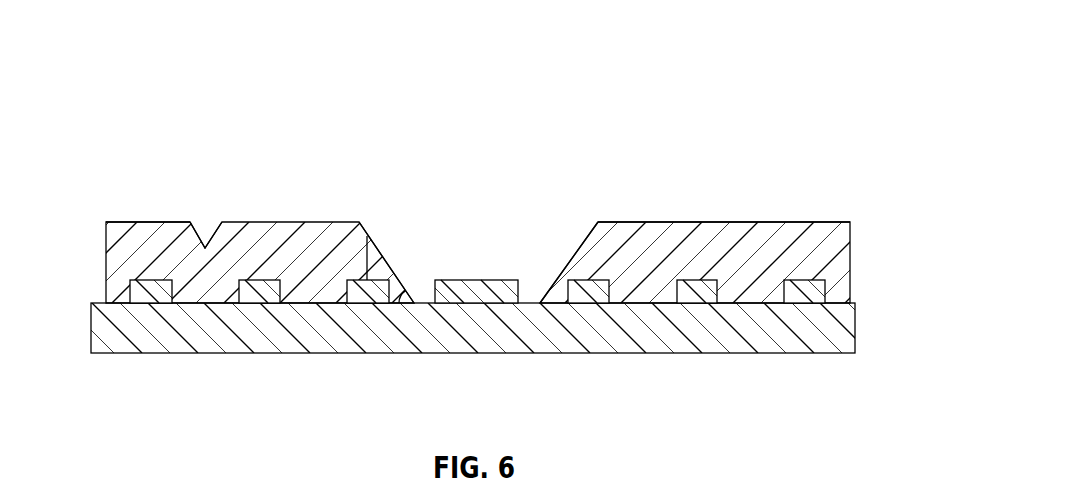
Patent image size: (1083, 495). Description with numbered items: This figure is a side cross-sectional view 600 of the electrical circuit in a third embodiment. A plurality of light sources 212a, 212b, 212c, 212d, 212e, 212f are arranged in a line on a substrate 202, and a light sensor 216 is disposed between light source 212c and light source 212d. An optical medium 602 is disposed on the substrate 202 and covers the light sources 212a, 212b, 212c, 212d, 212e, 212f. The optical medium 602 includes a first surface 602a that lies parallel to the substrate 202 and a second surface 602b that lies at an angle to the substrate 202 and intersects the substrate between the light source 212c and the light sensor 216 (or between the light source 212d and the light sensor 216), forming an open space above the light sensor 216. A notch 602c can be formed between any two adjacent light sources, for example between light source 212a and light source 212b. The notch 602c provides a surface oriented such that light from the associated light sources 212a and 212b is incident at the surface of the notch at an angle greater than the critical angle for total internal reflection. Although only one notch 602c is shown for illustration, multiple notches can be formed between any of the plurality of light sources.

The side cross-sectional view 600 is at (806, 43).
The optical medium 602 is at (313, 236).
The first surface 602a is at (152, 222).
The second surface 602b is at (375, 242).
The notch 602c is at (223, 219).
The substrate 202 is at (849, 333).
The light source 212a is at (129, 290).
The light source 212b is at (262, 303).
The light source 212c is at (358, 303).
The light source 212d is at (593, 303).
The light source 212e is at (697, 303).
The light source 212f is at (817, 303).
The light sensor 216 is at (477, 309).